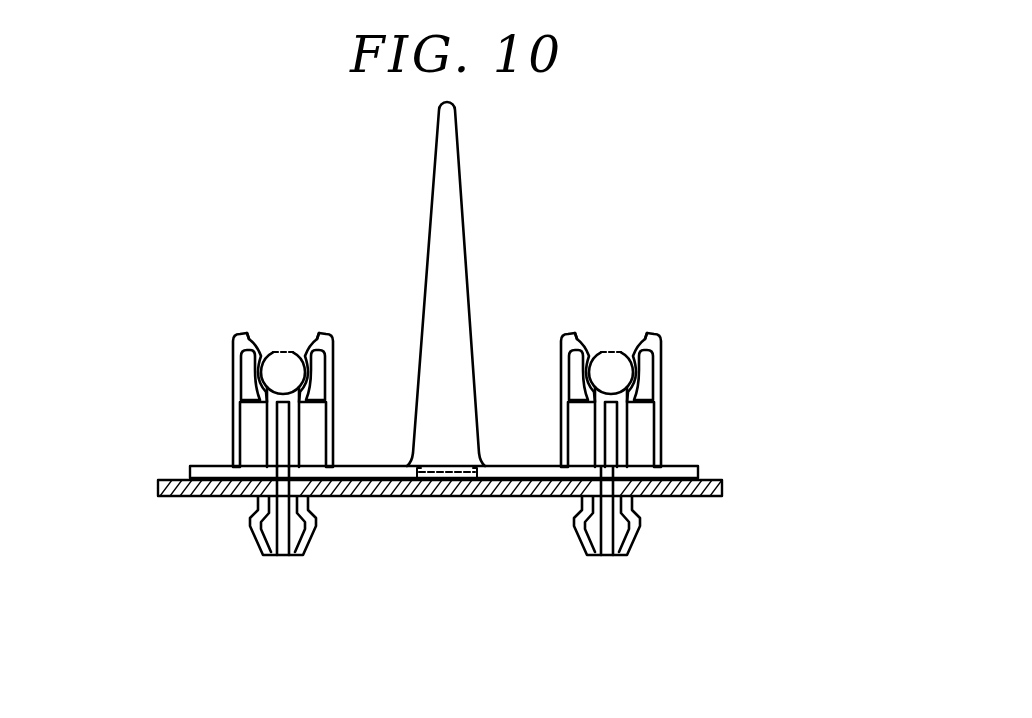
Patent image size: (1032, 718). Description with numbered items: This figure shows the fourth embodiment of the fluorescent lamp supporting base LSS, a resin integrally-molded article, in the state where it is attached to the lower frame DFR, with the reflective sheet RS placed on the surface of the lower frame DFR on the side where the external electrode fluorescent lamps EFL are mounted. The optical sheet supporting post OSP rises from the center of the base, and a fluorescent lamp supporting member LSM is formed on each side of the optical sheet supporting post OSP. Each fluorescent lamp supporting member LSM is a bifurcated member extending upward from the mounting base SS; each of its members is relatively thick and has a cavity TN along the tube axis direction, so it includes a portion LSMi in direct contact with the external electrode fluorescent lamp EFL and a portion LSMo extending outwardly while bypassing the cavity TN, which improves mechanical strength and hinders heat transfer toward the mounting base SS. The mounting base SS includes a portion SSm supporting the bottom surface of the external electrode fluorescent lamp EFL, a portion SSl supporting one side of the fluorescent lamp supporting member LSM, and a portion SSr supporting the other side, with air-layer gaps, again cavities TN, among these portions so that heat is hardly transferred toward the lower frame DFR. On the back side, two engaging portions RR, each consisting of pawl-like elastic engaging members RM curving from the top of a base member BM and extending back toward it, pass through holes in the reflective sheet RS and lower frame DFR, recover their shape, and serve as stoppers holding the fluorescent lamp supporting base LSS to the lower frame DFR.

The fluorescent lamp supporting base LSS is at (400, 225).
The optical sheet supporting post OSP is at (462, 178).
The external electrode fluorescent lamp EFL is at (282, 352).
The mounting base SS is at (355, 362).
The portion supporting the other side of the fluorescent lamp supporting member SSr is at (310, 408).
The portion supporting the surface of the external electrode fluorescent lamp at the SSm is at (277, 418).
The portion supporting one side of the fluorescent lamp supporting member SSl is at (245, 430).
The cavity TN is at (334, 357).
The reflective sheet RS is at (190, 474).
The lower frame DFR is at (220, 497).
The engaging portion RR is at (492, 566).
The fluorescent lamp supporting member LSM is at (722, 398).
The portion in direct contact with the external electrode fluorescent lamp LSMi is at (650, 360).
The portion extending outwardly LSMo is at (658, 394).
The engaging member RM is at (634, 531).
The base member BM is at (603, 530).